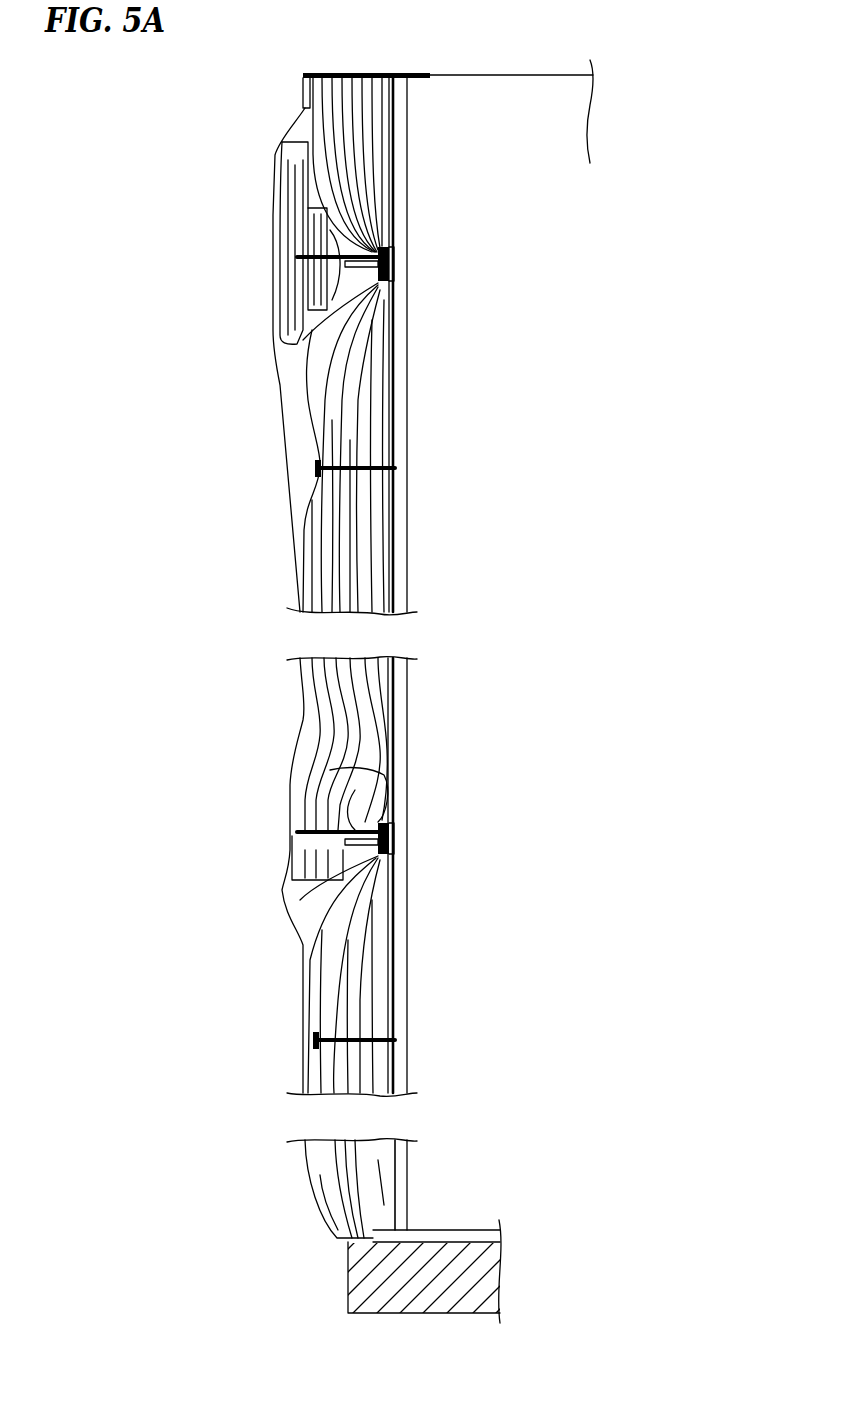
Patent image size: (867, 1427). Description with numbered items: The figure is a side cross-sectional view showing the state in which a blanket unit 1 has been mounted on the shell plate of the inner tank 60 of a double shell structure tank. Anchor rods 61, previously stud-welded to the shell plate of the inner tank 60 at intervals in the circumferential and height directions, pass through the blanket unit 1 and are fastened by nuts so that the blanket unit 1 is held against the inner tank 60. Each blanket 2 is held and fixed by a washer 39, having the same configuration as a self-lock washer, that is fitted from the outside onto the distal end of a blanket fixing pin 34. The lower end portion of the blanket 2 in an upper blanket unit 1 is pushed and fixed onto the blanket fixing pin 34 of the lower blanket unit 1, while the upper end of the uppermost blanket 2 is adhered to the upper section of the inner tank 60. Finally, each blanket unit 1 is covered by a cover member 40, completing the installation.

The blanket unit 1 is at (268, 547).
The blanket 2 is at (280, 234).
The blanket fixing pin 34 is at (360, 252).
The washer 39 is at (317, 470).
The cover member 40 is at (280, 360).
The inner tank 60 is at (408, 720).
The anchor rod 61 is at (393, 263).